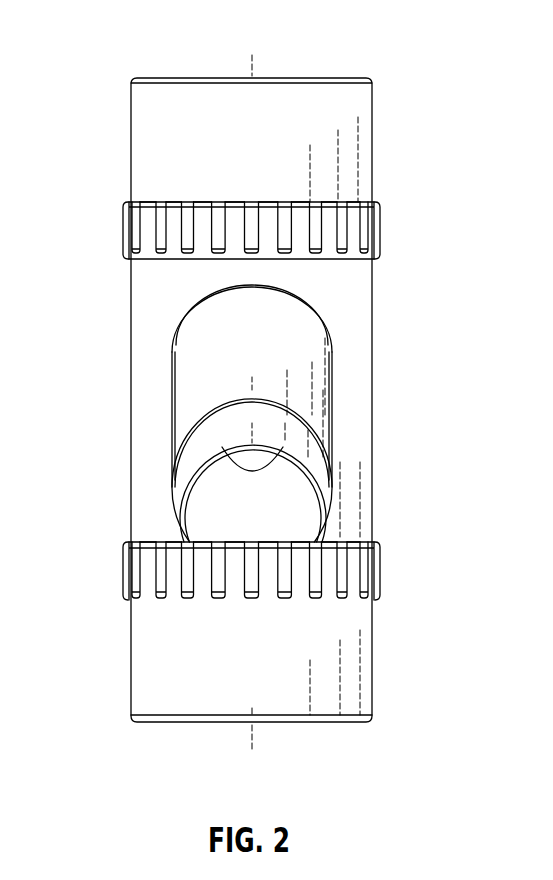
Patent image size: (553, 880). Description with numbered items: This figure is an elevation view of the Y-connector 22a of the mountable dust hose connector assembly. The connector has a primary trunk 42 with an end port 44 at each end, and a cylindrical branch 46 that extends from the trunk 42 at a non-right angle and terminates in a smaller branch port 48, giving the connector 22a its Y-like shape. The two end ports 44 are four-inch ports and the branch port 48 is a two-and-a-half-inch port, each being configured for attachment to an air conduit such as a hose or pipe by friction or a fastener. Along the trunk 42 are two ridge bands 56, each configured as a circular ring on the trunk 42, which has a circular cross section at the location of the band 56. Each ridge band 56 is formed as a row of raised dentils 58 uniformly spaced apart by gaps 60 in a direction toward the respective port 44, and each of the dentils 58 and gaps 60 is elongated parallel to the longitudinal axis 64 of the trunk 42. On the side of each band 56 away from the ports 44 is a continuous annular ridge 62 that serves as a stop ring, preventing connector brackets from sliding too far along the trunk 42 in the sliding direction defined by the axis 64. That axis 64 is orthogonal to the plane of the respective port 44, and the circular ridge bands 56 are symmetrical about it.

The Y-connector 22a is at (456, 60).
The trunk 42 is at (142, 160).
The end ports 44 is at (180, 76).
The branch 46 is at (293, 390).
The branch port 48 is at (327, 493).
The ridge band 56 is at (363, 248).
The dentils 58 is at (215, 217).
The gaps 60 is at (255, 202).
The annular ridge 62 is at (355, 260).
The longitudinal axis 64 is at (253, 74).